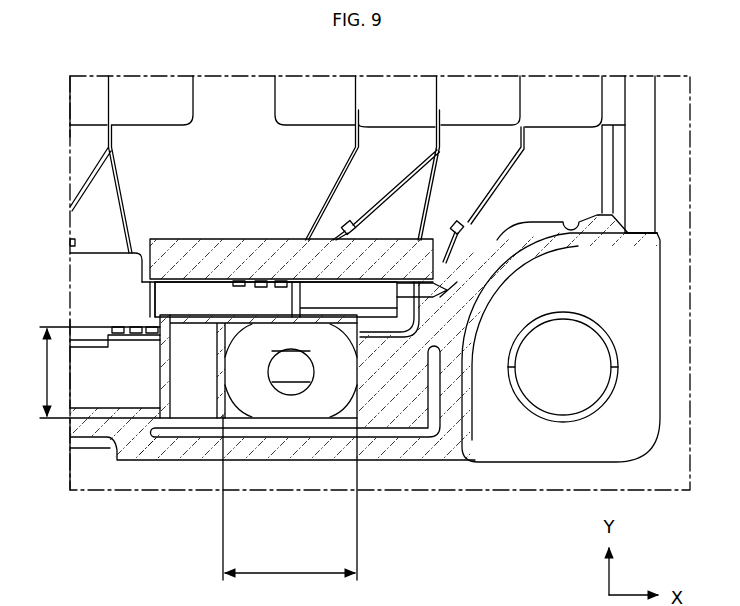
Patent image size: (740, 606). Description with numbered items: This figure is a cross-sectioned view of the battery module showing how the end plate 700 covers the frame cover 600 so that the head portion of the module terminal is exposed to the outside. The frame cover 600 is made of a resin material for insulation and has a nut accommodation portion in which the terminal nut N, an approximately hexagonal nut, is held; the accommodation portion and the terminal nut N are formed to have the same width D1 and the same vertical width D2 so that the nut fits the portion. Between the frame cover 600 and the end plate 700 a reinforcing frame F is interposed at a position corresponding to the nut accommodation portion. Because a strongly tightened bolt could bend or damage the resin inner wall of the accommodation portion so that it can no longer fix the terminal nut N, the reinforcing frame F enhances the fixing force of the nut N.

The frame cover 600 is at (160, 400).
The end plate 700 is at (427, 450).
The reinforcing frame F is at (188, 433).
The terminal nut N is at (292, 407).
The width D1 is at (89, 372).
The vertical width D2 is at (290, 497).